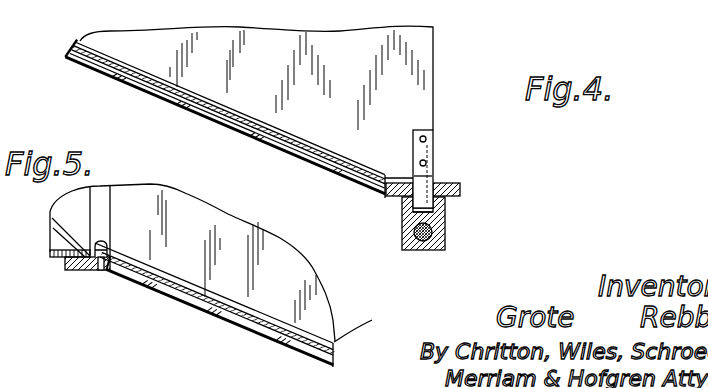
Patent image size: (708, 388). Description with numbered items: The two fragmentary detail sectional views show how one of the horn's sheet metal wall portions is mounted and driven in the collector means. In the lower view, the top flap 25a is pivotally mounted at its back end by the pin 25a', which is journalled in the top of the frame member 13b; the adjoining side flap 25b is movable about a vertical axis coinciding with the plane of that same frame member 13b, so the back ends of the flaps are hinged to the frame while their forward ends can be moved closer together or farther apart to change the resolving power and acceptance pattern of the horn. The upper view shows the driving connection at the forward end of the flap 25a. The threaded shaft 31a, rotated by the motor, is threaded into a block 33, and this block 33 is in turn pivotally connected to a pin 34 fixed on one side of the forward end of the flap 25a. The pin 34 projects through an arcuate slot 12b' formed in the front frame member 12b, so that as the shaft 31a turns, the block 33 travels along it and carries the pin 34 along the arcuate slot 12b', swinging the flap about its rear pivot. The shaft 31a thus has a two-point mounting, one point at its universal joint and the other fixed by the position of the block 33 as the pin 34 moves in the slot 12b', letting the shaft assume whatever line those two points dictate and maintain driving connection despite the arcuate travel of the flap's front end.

In FIG. 4, the top flap 25a is at (286, 78).
In FIG. 5, the top flap 25a is at (211, 263).
In FIG. 4, the side flap 25b is at (269, 128).
In FIG. 5, the side flap 25b is at (338, 343).
In FIG. 5, the pin 25a' is at (110, 285).
In FIG. 4, the frame member 12b is at (456, 184).
In FIG. 4, the arcuate slot 12b' is at (459, 165).
In FIG. 5, the frame member 13b is at (80, 272).
In FIG. 4, the threaded shaft 31a is at (430, 228).
In FIG. 4, the block 33 is at (443, 247).
In FIG. 4, the pin 34 is at (420, 176).